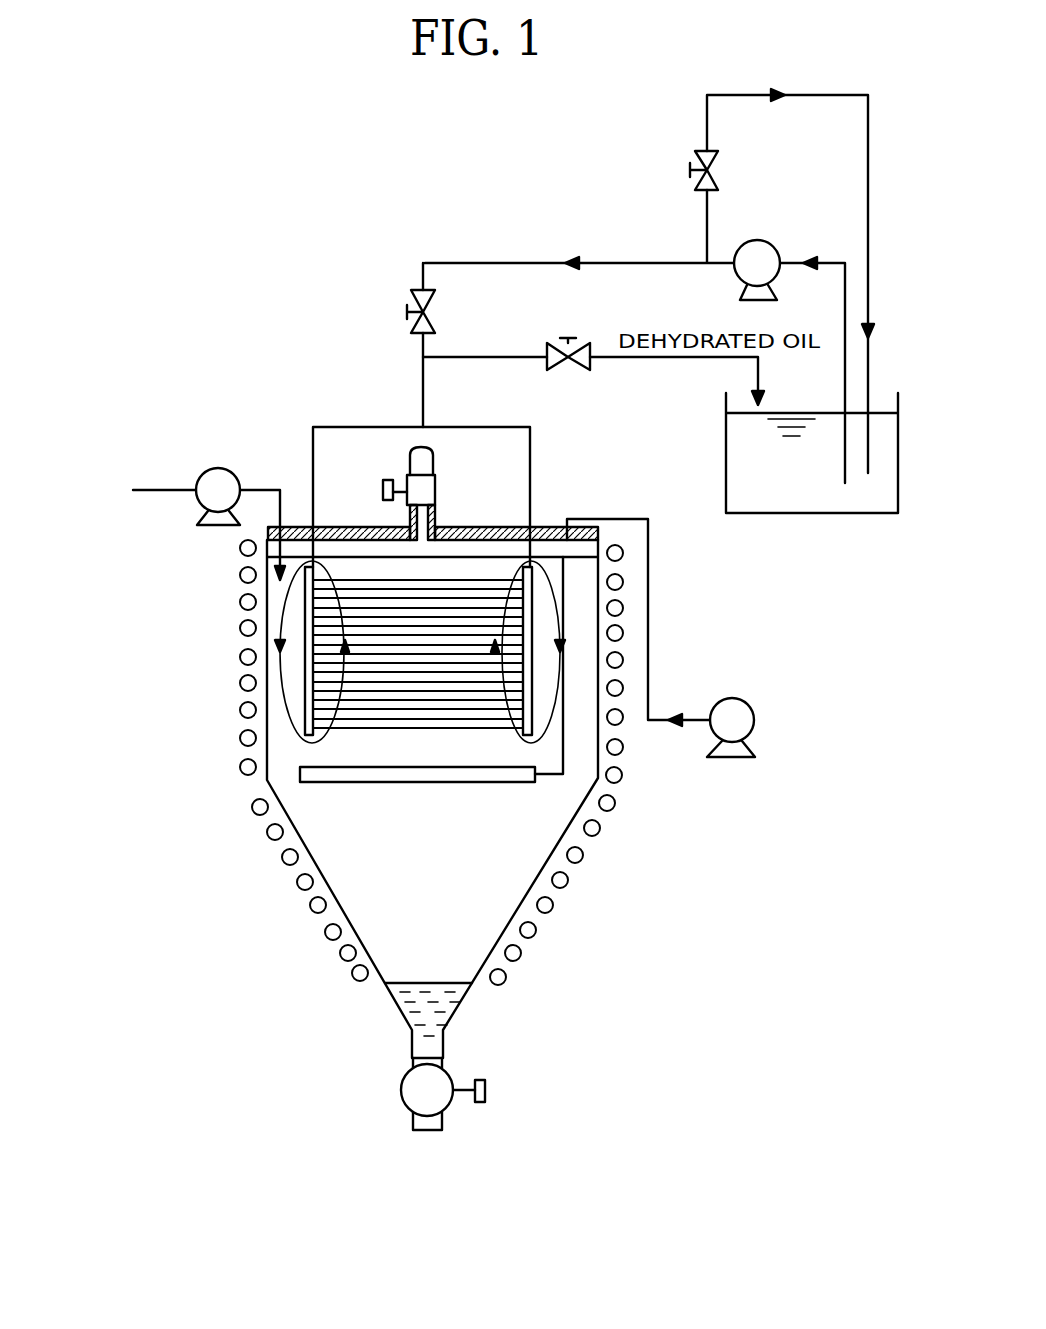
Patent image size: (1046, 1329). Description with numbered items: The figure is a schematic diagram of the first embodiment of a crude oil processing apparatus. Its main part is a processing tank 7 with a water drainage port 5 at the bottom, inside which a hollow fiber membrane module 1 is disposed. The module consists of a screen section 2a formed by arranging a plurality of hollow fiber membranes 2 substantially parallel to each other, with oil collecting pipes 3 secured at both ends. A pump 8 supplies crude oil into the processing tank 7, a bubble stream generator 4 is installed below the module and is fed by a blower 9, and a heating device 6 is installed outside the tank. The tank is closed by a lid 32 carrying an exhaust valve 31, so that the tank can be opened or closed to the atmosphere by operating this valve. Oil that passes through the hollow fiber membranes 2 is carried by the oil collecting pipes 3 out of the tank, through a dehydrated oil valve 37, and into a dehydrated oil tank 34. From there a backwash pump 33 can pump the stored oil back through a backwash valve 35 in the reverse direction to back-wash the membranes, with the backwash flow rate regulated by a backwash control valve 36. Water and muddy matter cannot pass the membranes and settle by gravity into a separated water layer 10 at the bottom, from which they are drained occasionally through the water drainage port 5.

The hollow fiber membrane module 1 is at (341, 652).
The hollow fiber membrane 2 is at (335, 654).
The screen section 2a is at (313, 683).
The oil collecting pipe 3 is at (307, 628).
The bubble stream generator 4 is at (307, 782).
The water drainage port 5 is at (445, 1045).
The heating device 6 is at (297, 881).
The processing tank 7 is at (583, 813).
The pump 8 is at (225, 470).
The blower 9 is at (744, 703).
The separated water layer 10 is at (402, 1007).
The exhaust valve 31 is at (435, 480).
The lid 32 is at (550, 527).
The backwash pump 33 is at (772, 243).
The dehydrated oil tank 34 is at (797, 515).
The backwash valve 35 is at (414, 292).
The backwash control valve 36 is at (698, 148).
The dehydrated oil valve 37 is at (573, 342).